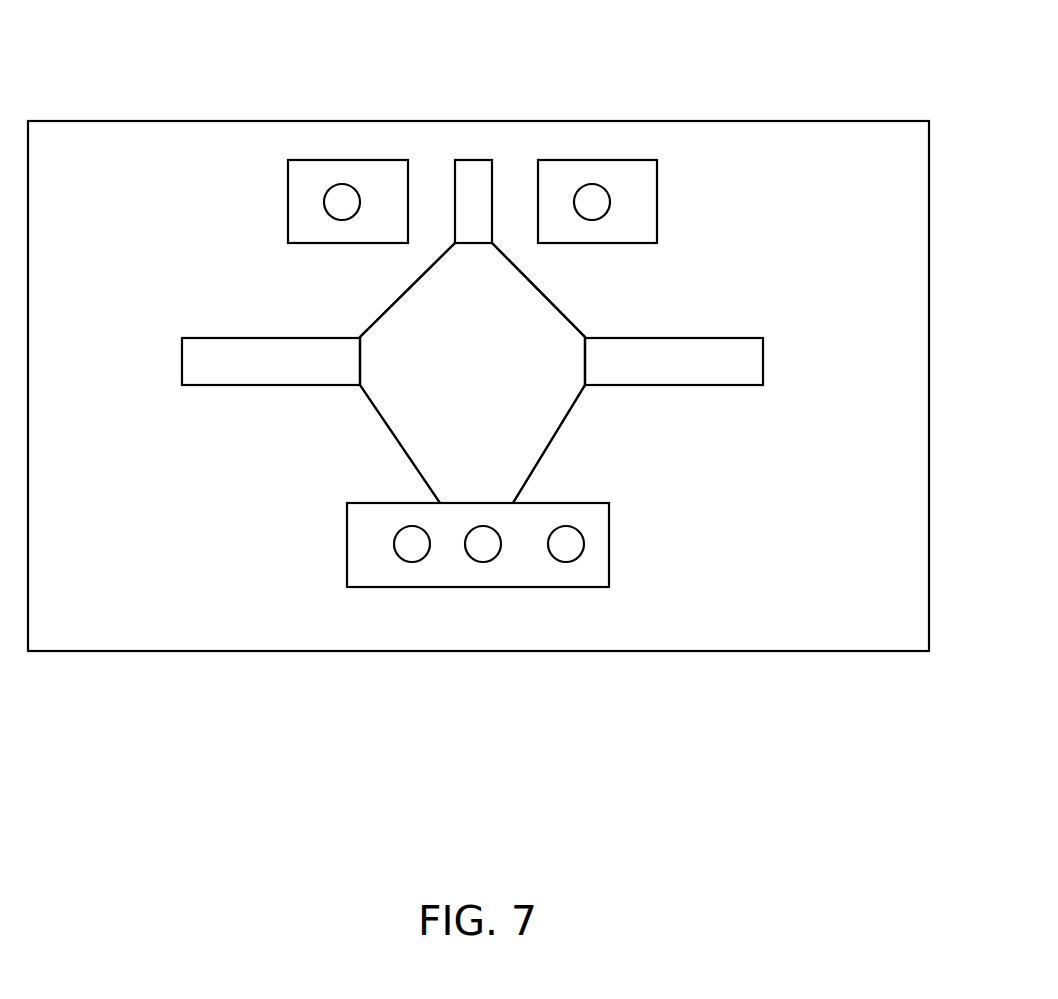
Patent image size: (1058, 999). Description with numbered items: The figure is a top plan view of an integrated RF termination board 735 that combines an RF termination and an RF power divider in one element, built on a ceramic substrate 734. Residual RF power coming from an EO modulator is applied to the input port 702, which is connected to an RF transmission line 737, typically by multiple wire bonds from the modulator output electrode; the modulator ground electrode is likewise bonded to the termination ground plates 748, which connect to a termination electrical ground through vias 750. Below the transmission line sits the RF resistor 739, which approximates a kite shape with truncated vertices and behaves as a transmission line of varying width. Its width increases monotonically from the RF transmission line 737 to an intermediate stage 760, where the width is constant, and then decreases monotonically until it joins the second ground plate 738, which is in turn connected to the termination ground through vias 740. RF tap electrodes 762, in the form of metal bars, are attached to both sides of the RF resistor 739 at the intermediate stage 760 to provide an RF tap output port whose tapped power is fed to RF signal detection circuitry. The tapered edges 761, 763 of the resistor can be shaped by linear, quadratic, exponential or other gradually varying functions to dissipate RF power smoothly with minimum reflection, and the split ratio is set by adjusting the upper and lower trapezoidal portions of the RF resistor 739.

The input port 702 is at (477, 150).
The ceramic substrate 734 is at (828, 577).
The integrated RF termination board 735 is at (211, 686).
The RF transmission line 737 is at (478, 199).
The second ground plate 738 is at (363, 550).
The RF resistor 739 is at (515, 373).
The vias 740 is at (567, 545).
The termination ground plate 748 is at (308, 185).
The vias 750 is at (335, 208).
The intermediate stage 760 is at (358, 361).
The tapered edge 761 is at (528, 285).
The RF tap electrodes 762 is at (275, 375).
The tapered edge 763 is at (522, 477).